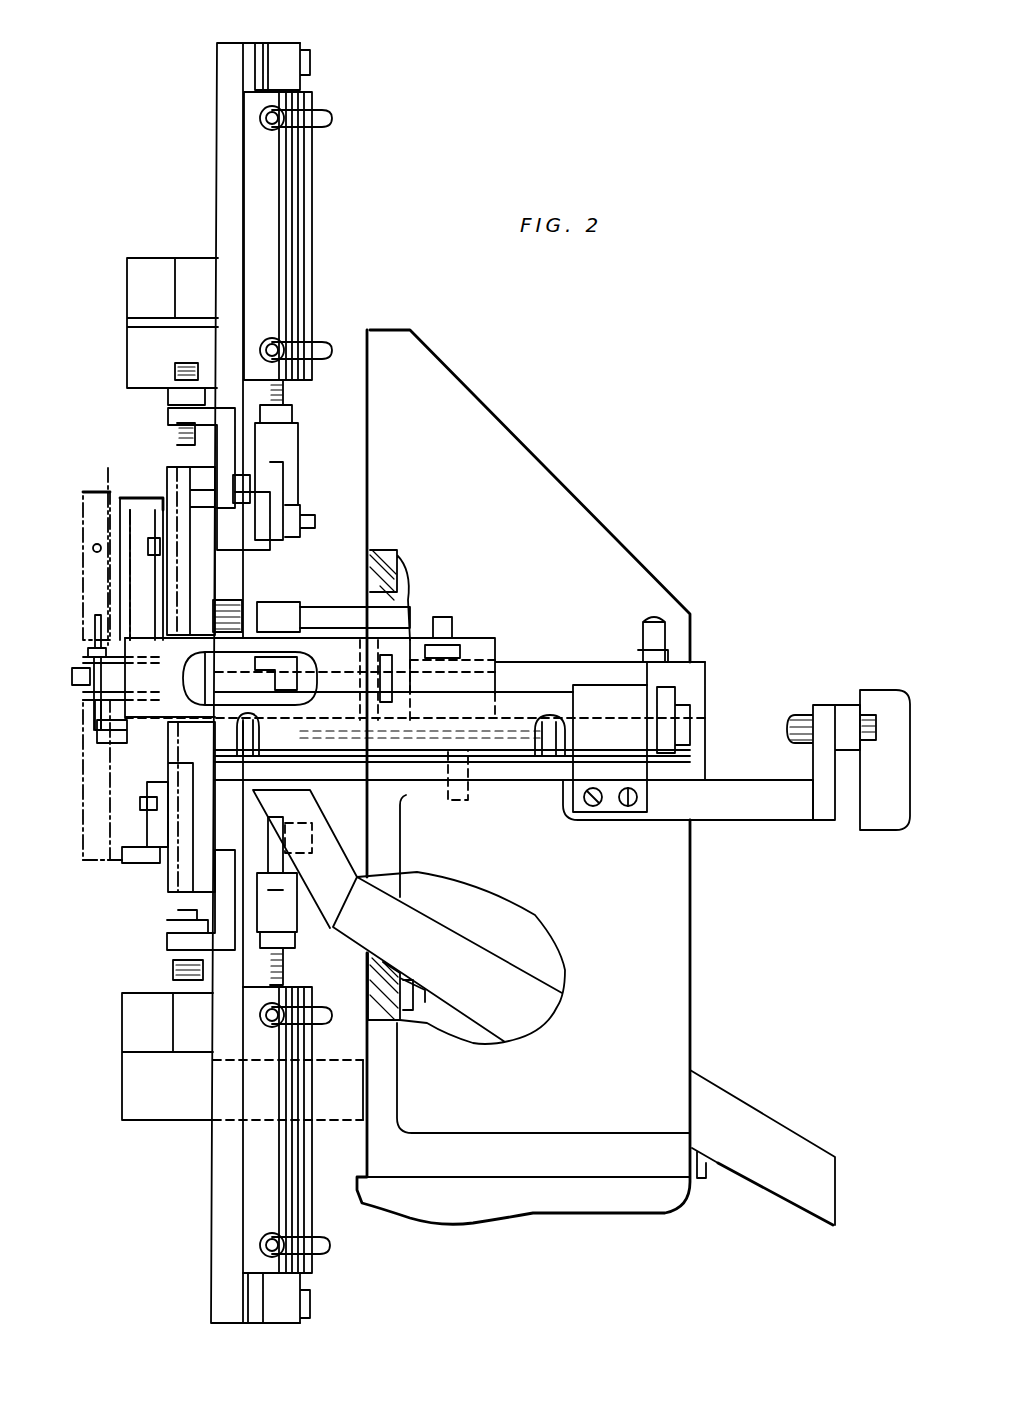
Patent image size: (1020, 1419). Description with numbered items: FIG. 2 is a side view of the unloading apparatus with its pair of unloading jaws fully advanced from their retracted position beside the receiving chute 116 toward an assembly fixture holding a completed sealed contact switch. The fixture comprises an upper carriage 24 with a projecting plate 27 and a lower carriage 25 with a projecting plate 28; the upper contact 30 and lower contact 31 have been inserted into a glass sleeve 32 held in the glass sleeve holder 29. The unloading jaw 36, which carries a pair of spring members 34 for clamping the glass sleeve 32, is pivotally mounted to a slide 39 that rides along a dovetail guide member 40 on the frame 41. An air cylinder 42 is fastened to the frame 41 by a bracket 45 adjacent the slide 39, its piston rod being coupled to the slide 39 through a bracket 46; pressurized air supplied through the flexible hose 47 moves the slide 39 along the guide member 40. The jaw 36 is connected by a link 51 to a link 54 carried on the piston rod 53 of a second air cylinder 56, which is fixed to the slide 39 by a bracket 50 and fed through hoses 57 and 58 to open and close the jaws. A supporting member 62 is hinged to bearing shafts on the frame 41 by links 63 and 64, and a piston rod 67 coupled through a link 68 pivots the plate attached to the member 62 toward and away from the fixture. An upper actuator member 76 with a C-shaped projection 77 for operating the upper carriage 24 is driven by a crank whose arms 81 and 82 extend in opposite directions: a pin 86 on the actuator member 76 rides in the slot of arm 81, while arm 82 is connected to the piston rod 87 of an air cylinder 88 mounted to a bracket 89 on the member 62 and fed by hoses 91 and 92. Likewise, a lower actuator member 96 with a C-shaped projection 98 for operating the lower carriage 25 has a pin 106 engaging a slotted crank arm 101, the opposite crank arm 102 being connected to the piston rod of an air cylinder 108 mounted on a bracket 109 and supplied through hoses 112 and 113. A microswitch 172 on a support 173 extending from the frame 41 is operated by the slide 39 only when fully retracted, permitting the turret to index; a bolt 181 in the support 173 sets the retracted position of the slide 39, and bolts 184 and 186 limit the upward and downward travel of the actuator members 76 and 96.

The upper carriage 24 is at (83, 506).
The lower carriage 25 is at (83, 800).
The plate 27 is at (108, 478).
The plate 28 is at (88, 868).
The glass sleeve holder 29 is at (88, 657).
The upper contact 30 is at (95, 622).
The lower contact 31 is at (95, 726).
The glass sleeve 32 is at (72, 688).
The spring members 34 is at (149, 677).
The unloading jaw 36 is at (140, 744).
The slide 39 is at (700, 746).
The dovetail guide member 40 is at (550, 792).
The frame 41 is at (390, 847).
The air cylinder 42 is at (520, 757).
The bracket 45 is at (625, 778).
The bracket 46 is at (672, 702).
The flexible hose 47 is at (249, 757).
The bracket 50 is at (697, 668).
The link 51 is at (205, 670).
The piston rod 53 is at (348, 684).
The link 54 is at (288, 684).
The second air cylinder 56 is at (537, 662).
The flexible hose 57 is at (643, 640).
The hose 58 is at (455, 617).
The supporting member 62 is at (225, 125).
The link 63 is at (130, 296).
The link 64 is at (125, 1020).
The piston rod 67 is at (340, 620).
The link 68 is at (290, 600).
The actuator member 76 is at (185, 612).
The C-shaped projection 77 is at (132, 497).
The arm 81 is at (150, 560).
The arm 82 is at (283, 470).
The pin 86 is at (160, 541).
The piston rod 87 is at (292, 413).
The air cylinder 88 is at (300, 216).
The bracket 89 is at (300, 62).
The flexible hose 91 is at (320, 120).
The hose 92 is at (330, 330).
The actuator member 96 is at (205, 766).
The C-shaped projection 98 is at (128, 864).
The arm 101 is at (150, 790).
The crank arm 102 is at (288, 880).
The pin 106 is at (140, 802).
The air cylinder 108 is at (300, 1175).
The bracket 109 is at (305, 1306).
The flexible hose 112 is at (330, 1242).
The flexible hose 113 is at (315, 1018).
The chute 116 is at (452, 966).
The microswitch 172 is at (882, 700).
The support 173 is at (813, 778).
The bolt 181 is at (800, 715).
The bolt 184 is at (182, 370).
The bolt 186 is at (175, 970).